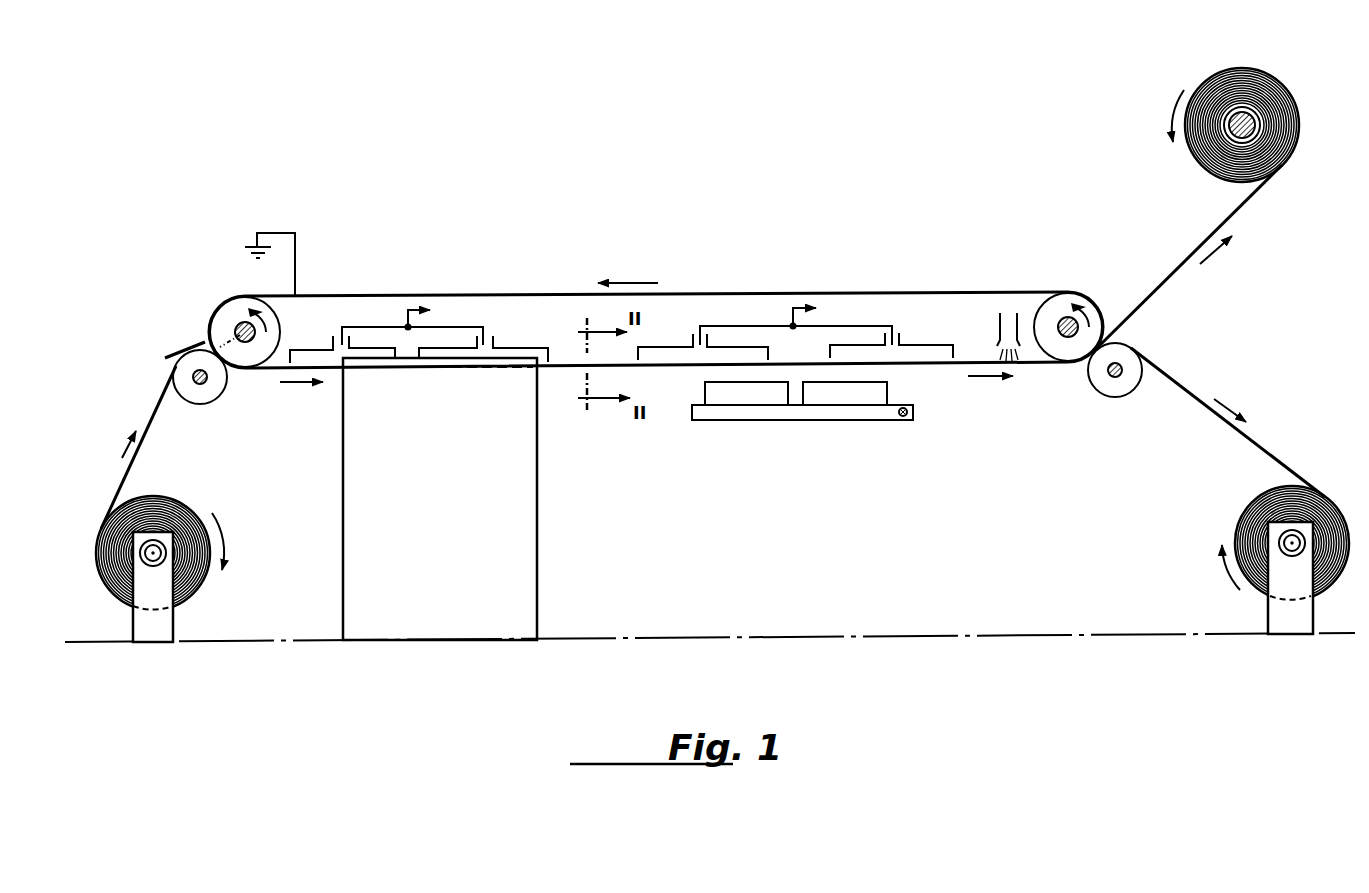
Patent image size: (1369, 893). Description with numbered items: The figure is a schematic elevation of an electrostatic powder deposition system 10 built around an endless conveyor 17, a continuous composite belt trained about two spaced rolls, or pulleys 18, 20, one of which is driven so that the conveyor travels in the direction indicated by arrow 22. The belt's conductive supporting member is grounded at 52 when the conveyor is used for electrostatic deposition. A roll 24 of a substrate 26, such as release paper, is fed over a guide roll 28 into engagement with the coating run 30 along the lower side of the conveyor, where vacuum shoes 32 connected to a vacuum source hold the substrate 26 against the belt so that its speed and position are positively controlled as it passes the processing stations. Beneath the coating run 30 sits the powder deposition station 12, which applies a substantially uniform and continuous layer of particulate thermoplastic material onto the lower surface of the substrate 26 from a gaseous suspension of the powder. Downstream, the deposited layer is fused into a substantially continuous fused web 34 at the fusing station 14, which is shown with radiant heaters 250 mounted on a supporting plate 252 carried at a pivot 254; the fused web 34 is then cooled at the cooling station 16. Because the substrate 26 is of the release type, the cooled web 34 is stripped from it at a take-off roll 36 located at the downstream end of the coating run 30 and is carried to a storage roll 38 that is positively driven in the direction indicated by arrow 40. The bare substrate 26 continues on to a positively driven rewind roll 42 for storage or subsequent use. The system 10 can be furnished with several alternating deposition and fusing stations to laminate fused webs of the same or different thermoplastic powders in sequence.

The electrostatic powder deposition system 10 is at (236, 326).
The powder deposition station 12 is at (546, 533).
The powder fusing station 14 is at (811, 447).
The cooling station 16 is at (1022, 314).
The endless conveyor 17 is at (356, 296).
The roll (pulley) 18 is at (270, 322).
The roll (pulley) 20 is at (1048, 306).
The arrow 22 is at (289, 390).
The roll of substrate 24 is at (178, 513).
The substrate 26 is at (118, 484).
The guide roll 28 is at (200, 405).
The coating run 30 is at (333, 372).
The vacuum shoes 32 is at (304, 357).
The fused web 34 is at (1193, 396).
The take-off roll 36 is at (1112, 390).
The storage roll 38 is at (1250, 515).
The arrow 40 is at (1230, 577).
The rewind roll 42 is at (1213, 155).
The ground 52 is at (252, 244).
The radiant heaters 250 is at (718, 390).
The support plate 252 is at (715, 416).
The pivot 254 is at (912, 412).